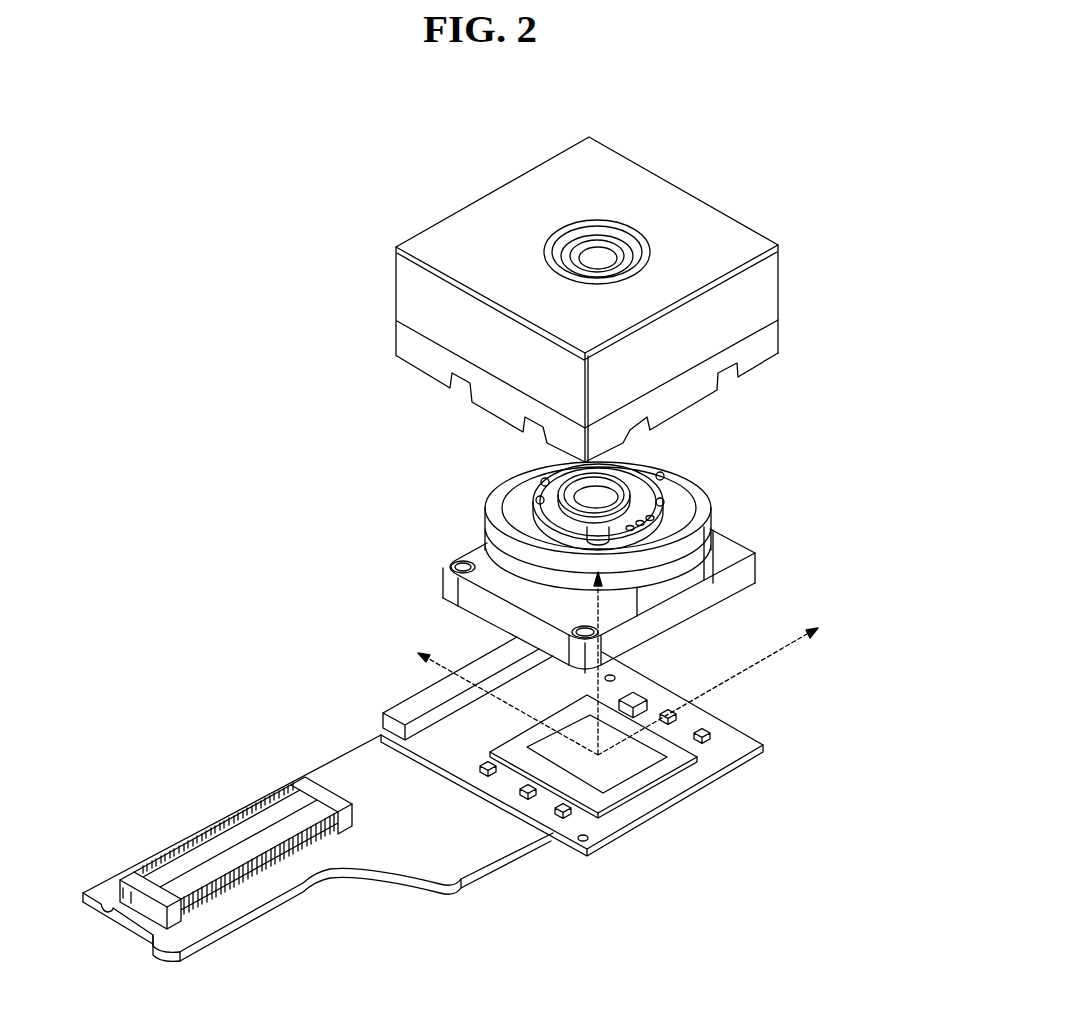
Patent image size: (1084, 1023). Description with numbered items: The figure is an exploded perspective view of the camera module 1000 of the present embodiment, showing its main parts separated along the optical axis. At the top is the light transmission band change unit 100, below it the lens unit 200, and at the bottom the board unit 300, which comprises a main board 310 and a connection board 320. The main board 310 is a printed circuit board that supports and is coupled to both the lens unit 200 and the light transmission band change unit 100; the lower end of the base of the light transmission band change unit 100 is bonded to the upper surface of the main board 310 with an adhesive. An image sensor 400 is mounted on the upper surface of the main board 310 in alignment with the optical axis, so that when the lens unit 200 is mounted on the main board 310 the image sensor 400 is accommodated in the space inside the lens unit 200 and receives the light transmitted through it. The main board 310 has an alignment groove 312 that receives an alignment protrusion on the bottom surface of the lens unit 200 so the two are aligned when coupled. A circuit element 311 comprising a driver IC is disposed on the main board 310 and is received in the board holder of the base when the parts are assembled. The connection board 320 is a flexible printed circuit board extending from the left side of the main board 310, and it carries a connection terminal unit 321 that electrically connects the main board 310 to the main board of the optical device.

The camera module 1000 is at (213, 142).
The light transmission band change unit 100 is at (733, 198).
The lens unit 200 is at (762, 538).
The board unit 300 is at (500, 799).
The main board 310 is at (647, 808).
The circuit element 311 is at (400, 708).
The alignment groove 312 is at (614, 679).
The connection board 320 is at (343, 768).
The connection terminal unit 321 is at (207, 853).
The image sensor 400 is at (645, 765).